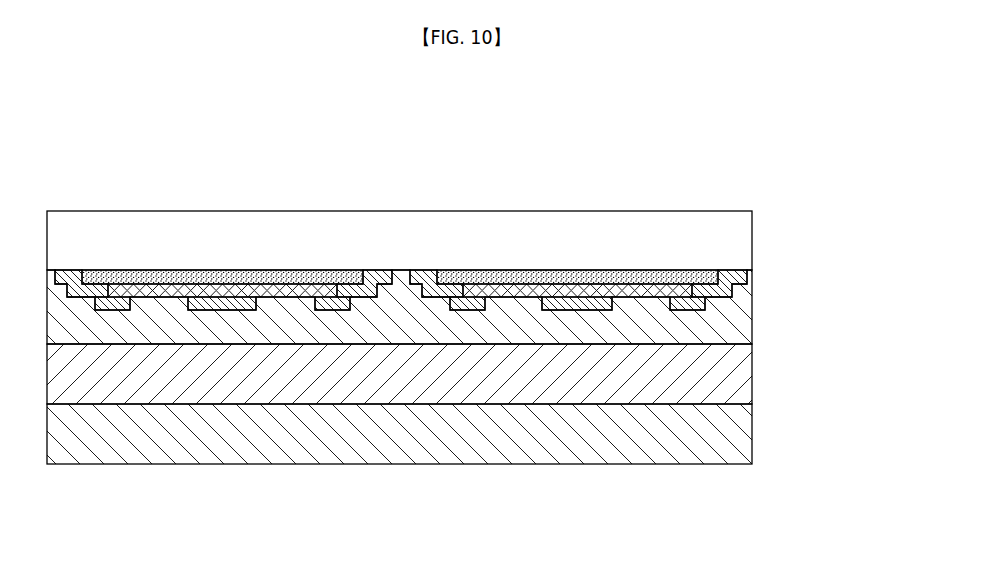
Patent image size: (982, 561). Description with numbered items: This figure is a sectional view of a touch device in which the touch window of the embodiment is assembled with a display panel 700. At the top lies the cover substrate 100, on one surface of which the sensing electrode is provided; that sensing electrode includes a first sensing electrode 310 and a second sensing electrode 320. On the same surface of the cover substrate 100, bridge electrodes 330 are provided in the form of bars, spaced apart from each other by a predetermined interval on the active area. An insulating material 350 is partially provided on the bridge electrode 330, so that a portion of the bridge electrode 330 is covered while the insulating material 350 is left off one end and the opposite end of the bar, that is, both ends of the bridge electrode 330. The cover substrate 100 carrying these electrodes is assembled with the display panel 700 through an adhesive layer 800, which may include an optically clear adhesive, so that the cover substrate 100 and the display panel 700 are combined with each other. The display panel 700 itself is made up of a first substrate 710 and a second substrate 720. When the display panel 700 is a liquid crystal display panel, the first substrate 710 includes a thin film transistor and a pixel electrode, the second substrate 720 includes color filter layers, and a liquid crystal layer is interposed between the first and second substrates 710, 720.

The cover substrate 100 is at (740, 243).
The adhesive layer 800 is at (740, 314).
The bridge electrode 330 is at (167, 270).
The insulating material 350 is at (277, 284).
The second sensing electrode 320 is at (112, 306).
The first sensing electrode 310 is at (223, 306).
The display panel 700 is at (461, 404).
The second substrate 720 is at (740, 378).
The first substrate 710 is at (434, 434).